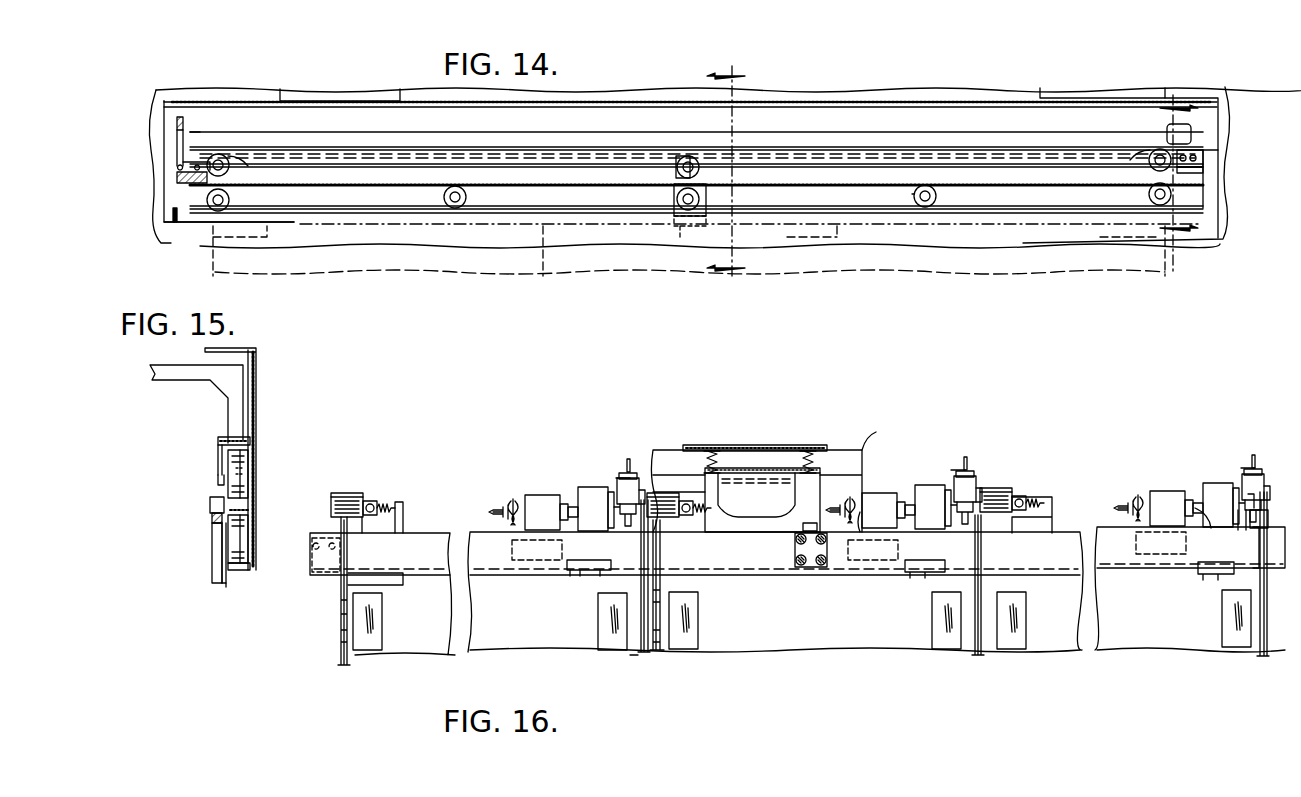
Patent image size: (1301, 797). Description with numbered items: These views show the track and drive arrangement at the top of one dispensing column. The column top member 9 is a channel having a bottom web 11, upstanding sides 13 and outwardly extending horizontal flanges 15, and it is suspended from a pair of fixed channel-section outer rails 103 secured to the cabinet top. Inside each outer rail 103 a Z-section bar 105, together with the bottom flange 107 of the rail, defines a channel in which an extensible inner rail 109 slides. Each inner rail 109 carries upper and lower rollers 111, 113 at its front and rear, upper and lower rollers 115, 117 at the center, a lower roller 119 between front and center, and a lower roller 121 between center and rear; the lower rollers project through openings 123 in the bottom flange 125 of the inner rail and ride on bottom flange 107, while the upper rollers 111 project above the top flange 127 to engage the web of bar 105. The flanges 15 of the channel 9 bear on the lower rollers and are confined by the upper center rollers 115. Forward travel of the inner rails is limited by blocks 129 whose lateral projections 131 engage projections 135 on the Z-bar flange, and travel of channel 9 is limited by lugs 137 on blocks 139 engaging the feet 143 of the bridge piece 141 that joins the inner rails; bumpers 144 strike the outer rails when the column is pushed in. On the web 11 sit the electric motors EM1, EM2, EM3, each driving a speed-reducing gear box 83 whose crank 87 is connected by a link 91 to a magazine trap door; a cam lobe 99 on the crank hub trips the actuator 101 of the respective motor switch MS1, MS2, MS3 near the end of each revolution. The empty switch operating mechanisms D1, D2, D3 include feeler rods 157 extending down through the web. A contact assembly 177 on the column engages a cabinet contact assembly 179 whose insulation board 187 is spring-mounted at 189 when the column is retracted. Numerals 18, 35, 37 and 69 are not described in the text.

In FIG. 14, the column top member 9 is at (193, 227).
In FIG. 15, the column top member 9 is at (212, 590).
In FIG. 16, the column top member 9 is at (322, 580).
In FIG. 16, the bottom web 11 is at (508, 576).
In FIG. 15, the upstanding sides 13 is at (226, 588).
In FIG. 16, the upstanding sides 13 is at (1128, 585).
In FIG. 14, the horizontal flanges 15 is at (696, 171).
In FIG. 16, the horizontal flanges 15 is at (443, 533).
In FIG. 14, the section line 18 is at (1165, 185).
In FIG. 16, the tool holder block 35 is at (383, 630).
In FIG. 16, the rod 37 is at (634, 653).
In FIG. 16, the bracket 69 is at (1240, 516).
In FIG. 16, the speed-reducing gear box 83 is at (588, 488).
In FIG. 16, the crank 87 is at (1260, 539).
In FIG. 16, the link 91 is at (643, 660).
In FIG. 16, the lobe 99 is at (1246, 530).
In FIG. 16, the actuator 101 is at (1254, 502).
In FIG. 14, the outer rail 103 is at (168, 117).
In FIG. 15, the outer rail 103 is at (256, 366).
In FIG. 16, the outer rail 103 is at (774, 474).
In FIG. 14, the Z-section bar 105 is at (563, 134).
In FIG. 15, the Z-section bar 105 is at (208, 438).
In FIG. 15, the bottom flange 107 is at (238, 574).
In FIG. 14, the inner rail 109 is at (1193, 195).
In FIG. 14, the upper roller 111 is at (229, 170).
In FIG. 14, the lower roller 113 is at (229, 197).
In FIG. 14, the upper center roller 115 is at (702, 150).
In FIG. 15, the upper center roller 115 is at (248, 490).
In FIG. 14, the lower center roller 117 is at (676, 196).
In FIG. 15, the lower center roller 117 is at (248, 530).
In FIG. 14, the lower roller 119 is at (466, 197).
In FIG. 14, the lower roller 121 is at (912, 195).
In FIG. 14, the openings 123 is at (936, 198).
In FIG. 14, the bottom flange 125 is at (1022, 234).
In FIG. 14, the top flange 127 is at (1038, 162).
In FIG. 14, the block 129 is at (1206, 155).
In FIG. 14, the lateral projection 131 is at (1204, 175).
In FIG. 14, the downwardly extending projection 135 is at (674, 173).
In FIG. 15, the downwardly extending projection 135 is at (218, 479).
In FIG. 14, the lug 137 is at (706, 200).
In FIG. 15, the lug 137 is at (210, 517).
In FIG. 16, the lug 137 is at (805, 523).
In FIG. 14, the block 139 is at (685, 225).
In FIG. 15, the block 139 is at (212, 558).
In FIG. 16, the block 139 is at (790, 557).
In FIG. 14, the bridge piece 141 is at (186, 118).
In FIG. 15, the bridge piece 141 is at (160, 382).
In FIG. 14, the feet 143 is at (176, 177).
In FIG. 15, the feet 143 is at (210, 494).
In FIG. 14, the bumper 144 is at (172, 222).
In FIG. 16, the bumper 144 is at (316, 553).
In FIG. 16, the feeler rod 157 is at (341, 608).
In FIG. 16, the contact assembly 177 is at (723, 477).
In FIG. 16, the contact assembly 179 is at (686, 465).
In FIG. 16, the insulation board 187 is at (754, 445).
In FIG. 16, the spring mounting 189 is at (814, 458).
In FIG. 16, the empty switch operating mechanism D1 is at (378, 492).
In FIG. 16, the empty switch operating mechanism D2 is at (670, 524).
In FIG. 16, the empty switch operating mechanism D3 is at (1004, 489).
In FIG. 16, the electric motor EM1 is at (543, 492).
In FIG. 16, the electric motor EM2 is at (882, 490).
In FIG. 16, the electric motor EM3 is at (1162, 488).
In FIG. 16, the motor switch MS1 is at (621, 476).
In FIG. 16, the motor switch MS2 is at (953, 468).
In FIG. 16, the motor switch MS3 is at (1243, 470).